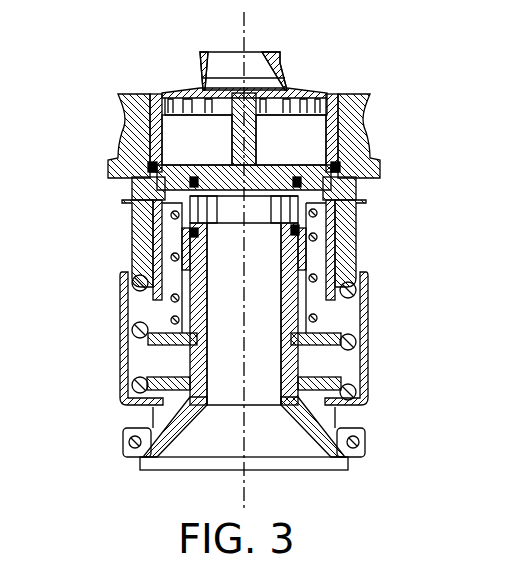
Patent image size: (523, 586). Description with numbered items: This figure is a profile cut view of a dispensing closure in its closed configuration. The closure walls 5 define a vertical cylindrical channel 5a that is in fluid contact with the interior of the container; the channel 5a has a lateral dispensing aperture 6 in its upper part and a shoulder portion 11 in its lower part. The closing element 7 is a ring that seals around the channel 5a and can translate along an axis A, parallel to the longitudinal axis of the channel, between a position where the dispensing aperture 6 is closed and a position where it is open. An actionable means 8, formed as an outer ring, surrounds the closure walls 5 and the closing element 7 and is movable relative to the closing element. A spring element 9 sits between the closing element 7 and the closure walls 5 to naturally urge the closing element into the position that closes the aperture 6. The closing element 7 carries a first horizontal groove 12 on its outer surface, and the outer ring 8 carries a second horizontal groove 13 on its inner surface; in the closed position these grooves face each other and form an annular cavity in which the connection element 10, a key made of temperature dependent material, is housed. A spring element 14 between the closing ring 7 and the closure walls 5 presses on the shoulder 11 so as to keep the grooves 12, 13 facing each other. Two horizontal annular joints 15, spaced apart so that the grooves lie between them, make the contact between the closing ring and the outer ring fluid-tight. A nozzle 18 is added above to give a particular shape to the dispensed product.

The axis A is at (243, 22).
The closure walls 5 is at (195, 365).
The vertical cylindrical channel 5a is at (258, 297).
The dispensing aperture 6 is at (222, 210).
The closing element 7 is at (334, 95).
The actionable means 8 is at (142, 258).
The spring element 9 is at (162, 298).
The connection element 10 is at (133, 183).
The shoulder portion 11 is at (370, 378).
The first horizontal groove 12 is at (166, 168).
The second horizontal groove 13 is at (352, 184).
The spring element 14 is at (357, 338).
The horizontal annular joints 15 is at (296, 176).
The nozzle 18 is at (283, 63).